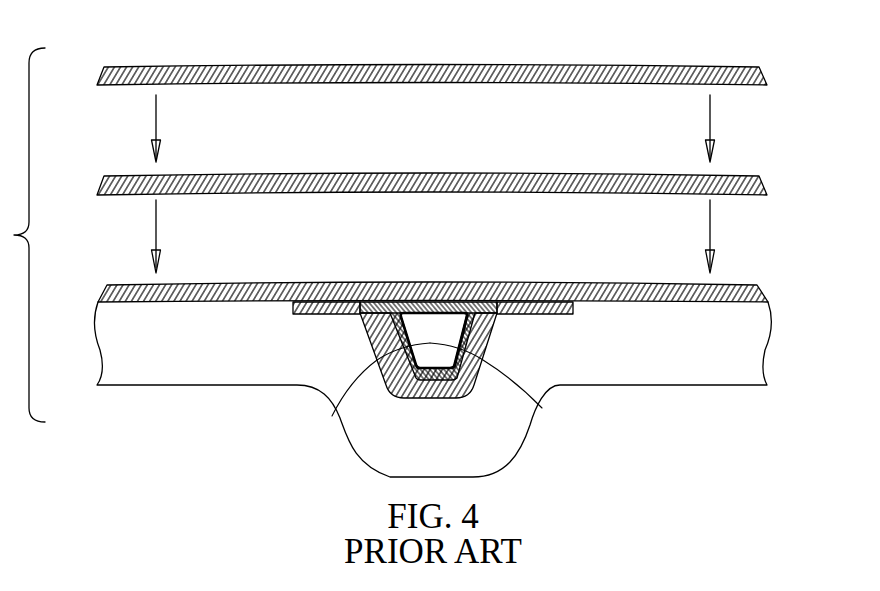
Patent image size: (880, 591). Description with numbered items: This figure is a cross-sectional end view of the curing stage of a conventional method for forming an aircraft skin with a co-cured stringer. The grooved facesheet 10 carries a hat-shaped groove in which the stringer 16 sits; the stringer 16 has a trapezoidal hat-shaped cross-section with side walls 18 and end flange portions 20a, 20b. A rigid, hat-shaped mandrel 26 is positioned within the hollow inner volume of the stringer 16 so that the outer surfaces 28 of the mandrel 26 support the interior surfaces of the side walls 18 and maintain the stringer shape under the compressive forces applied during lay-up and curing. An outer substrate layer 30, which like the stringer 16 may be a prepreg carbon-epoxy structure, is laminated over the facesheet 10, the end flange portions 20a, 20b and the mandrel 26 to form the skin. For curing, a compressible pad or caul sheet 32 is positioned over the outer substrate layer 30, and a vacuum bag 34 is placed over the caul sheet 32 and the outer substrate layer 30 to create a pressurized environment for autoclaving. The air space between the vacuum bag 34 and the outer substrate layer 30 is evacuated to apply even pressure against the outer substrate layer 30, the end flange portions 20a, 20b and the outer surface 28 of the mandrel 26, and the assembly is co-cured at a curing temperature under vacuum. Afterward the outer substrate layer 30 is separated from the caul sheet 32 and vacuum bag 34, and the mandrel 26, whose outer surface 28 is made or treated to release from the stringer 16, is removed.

The grooved facesheet 10 is at (718, 373).
The stringer 16 is at (422, 398).
The side walls 18 is at (538, 402).
The end flange portion 20a is at (312, 318).
The end flange portion 20b is at (555, 318).
The mandrel 26 is at (335, 411).
The outer surfaces of the mandrel 28 is at (410, 301).
The outer substrate layer 30 is at (662, 283).
The caul sheet 32 is at (607, 175).
The vacuum bag 34 is at (637, 65).